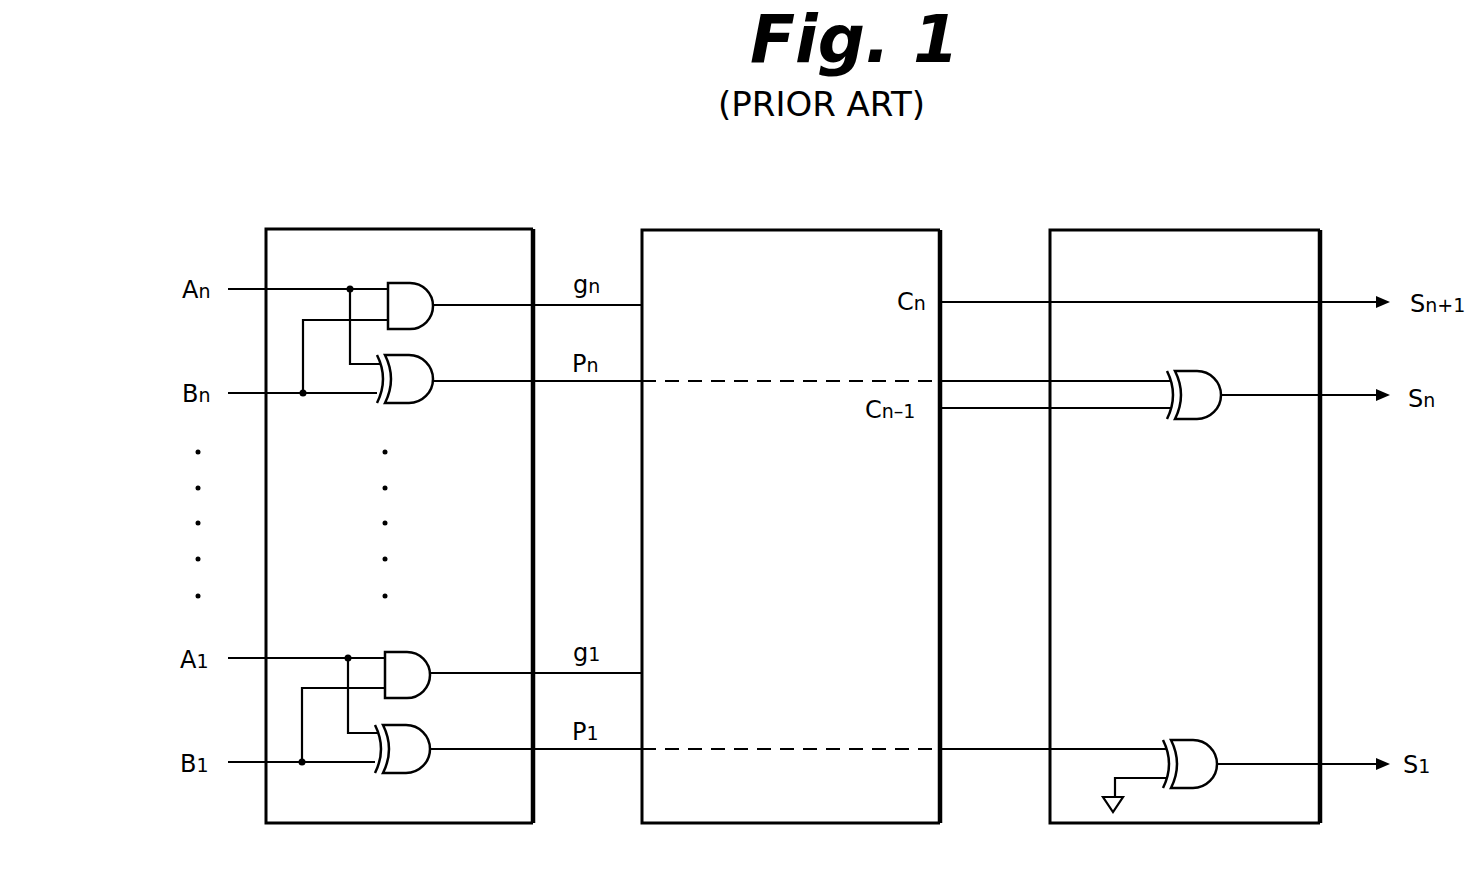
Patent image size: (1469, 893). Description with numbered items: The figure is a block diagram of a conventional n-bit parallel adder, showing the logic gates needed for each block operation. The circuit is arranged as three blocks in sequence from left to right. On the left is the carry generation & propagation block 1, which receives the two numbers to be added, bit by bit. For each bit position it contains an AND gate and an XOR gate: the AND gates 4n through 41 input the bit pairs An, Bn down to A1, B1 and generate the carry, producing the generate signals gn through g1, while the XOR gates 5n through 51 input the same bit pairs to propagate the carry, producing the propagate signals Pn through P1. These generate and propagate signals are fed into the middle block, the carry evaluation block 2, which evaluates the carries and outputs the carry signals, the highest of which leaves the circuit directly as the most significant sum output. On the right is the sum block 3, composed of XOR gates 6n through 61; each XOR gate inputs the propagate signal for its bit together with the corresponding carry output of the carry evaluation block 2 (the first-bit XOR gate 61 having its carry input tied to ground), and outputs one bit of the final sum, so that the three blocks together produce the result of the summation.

The carry generation & propagation block 1 is at (455, 229).
The carry evaluation block 2 is at (874, 230).
The sum block 3 is at (1280, 230).
The AND gate 4n is at (423, 283).
The XOR gate 5n is at (437, 365).
The AND gate 41 is at (420, 652).
The XOR gate 51 is at (436, 735).
The XOR gate 6n is at (1192, 371).
The XOR gate 61 is at (1190, 740).